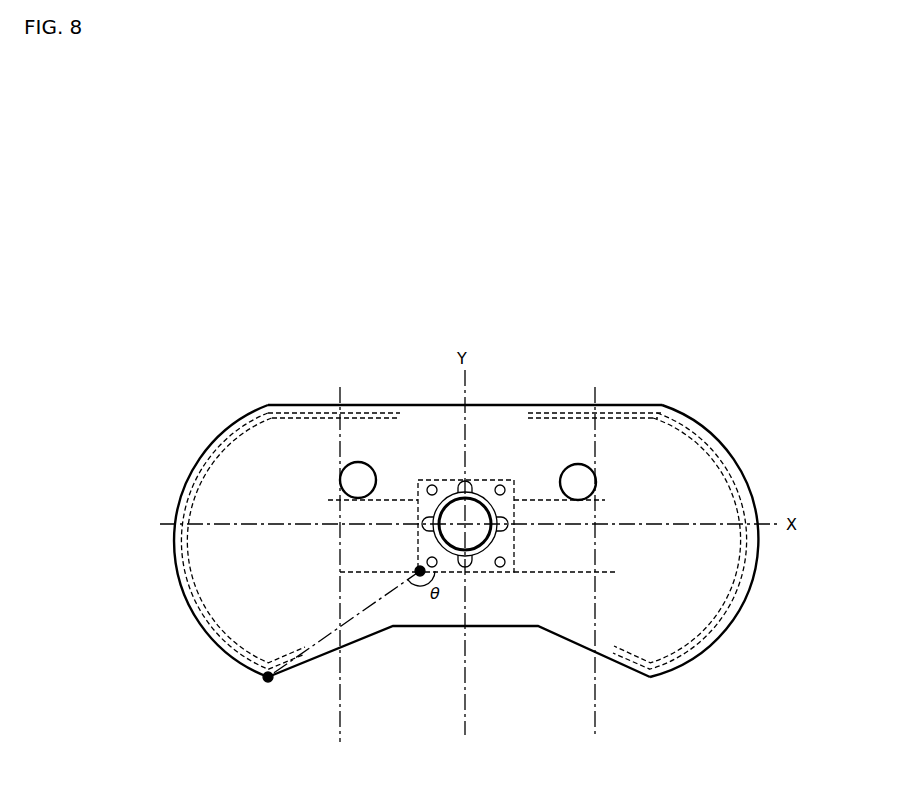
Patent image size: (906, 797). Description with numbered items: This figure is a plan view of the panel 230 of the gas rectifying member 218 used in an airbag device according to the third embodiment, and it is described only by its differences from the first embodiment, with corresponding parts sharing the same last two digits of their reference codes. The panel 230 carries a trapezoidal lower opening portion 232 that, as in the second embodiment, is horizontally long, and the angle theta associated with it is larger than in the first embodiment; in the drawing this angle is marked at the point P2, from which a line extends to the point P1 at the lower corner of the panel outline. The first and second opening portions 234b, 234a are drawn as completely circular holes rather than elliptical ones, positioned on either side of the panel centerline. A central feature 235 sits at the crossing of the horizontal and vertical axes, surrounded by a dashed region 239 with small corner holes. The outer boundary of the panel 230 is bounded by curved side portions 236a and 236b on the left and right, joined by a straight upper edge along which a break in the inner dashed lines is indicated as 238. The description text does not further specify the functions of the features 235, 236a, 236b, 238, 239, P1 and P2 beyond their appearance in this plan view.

The gas rectifying member 218 is at (662, 373).
The panel 230 is at (318, 410).
The lower opening portion 232 is at (562, 641).
The second opening portion 234a is at (360, 462).
The first opening portion 234b is at (579, 464).
The shaft hub 235 is at (509, 521).
The first arcuate side wall 236a is at (221, 448).
The second arcuate side wall 236b is at (708, 638).
The opening 238 is at (492, 418).
The mounting plate 239 is at (418, 543).
The first point P1 is at (268, 682).
The second point P2 is at (416, 574).